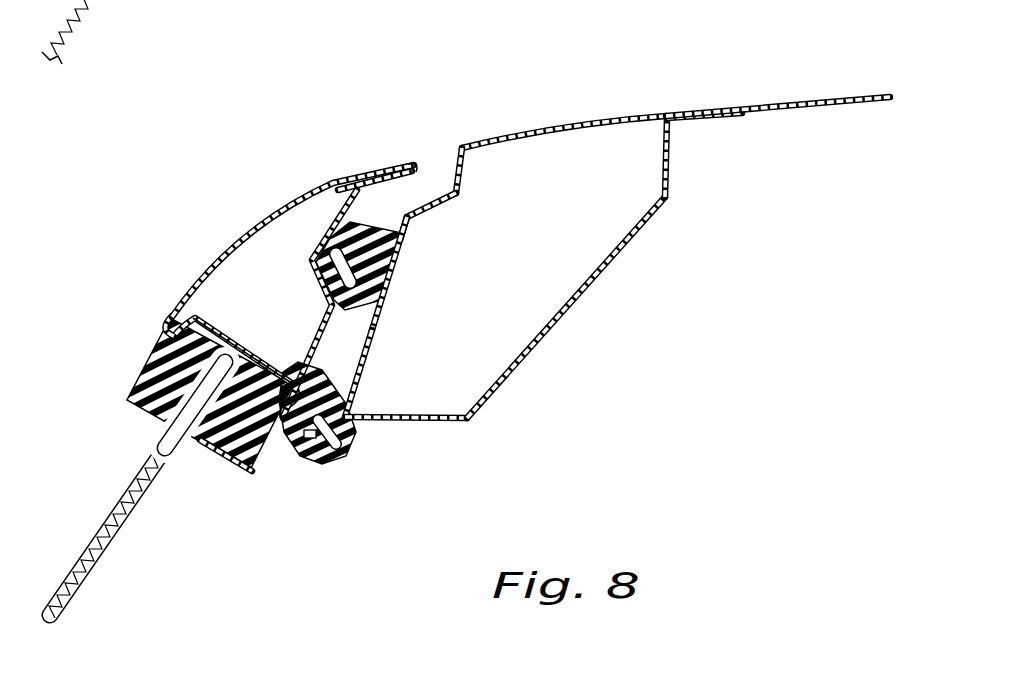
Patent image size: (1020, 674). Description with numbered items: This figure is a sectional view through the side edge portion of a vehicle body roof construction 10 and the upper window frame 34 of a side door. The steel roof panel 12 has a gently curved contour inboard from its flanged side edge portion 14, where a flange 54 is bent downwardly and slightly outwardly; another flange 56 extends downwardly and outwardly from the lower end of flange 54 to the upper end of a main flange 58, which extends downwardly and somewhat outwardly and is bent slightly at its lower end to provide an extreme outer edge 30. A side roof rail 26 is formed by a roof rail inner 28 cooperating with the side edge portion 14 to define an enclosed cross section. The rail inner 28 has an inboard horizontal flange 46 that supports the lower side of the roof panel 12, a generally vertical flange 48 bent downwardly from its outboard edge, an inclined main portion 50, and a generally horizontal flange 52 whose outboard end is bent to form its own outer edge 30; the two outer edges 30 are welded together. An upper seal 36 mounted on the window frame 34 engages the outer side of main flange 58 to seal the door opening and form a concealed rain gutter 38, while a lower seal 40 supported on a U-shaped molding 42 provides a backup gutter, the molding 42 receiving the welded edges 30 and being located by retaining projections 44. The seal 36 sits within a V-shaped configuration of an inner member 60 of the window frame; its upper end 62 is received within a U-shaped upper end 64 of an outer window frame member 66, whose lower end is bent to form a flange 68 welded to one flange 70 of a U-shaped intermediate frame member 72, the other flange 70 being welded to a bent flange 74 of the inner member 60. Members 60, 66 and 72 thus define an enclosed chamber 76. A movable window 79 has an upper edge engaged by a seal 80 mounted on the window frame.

The vehicle body roof construction 10 is at (778, 61).
The roof panel 12 is at (828, 98).
The flanged side edge portion 14 is at (468, 145).
The side roof rail 26 is at (574, 246).
The roof rail inner 28 is at (528, 356).
The extreme outer edges 30 is at (355, 443).
The upper window frame 34 is at (276, 201).
The upper seal 36 is at (350, 250).
The concealed rain gutter 38 is at (428, 192).
The lower seal 40 is at (352, 386).
The molding 42 is at (352, 428).
The retaining projections 44 is at (322, 448).
The inboard horizontal flange 46 is at (722, 120).
The vertical flange 48 is at (672, 172).
The inclined main portion 50 is at (632, 250).
The horizontal flange 52 is at (420, 414).
The flange 54 is at (462, 178).
The flange 56 is at (432, 214).
The main flange 58 is at (376, 304).
The inner member 60 is at (327, 323).
The upper end 62 is at (396, 178).
The U-shaped upper end 64 is at (413, 160).
The outer window frame member 66 is at (205, 282).
The flange 68 is at (160, 378).
The flange 70 is at (190, 324).
The intermediate frame member 72 is at (244, 346).
The bent flange 74 is at (242, 475).
The enclosed chamber 76 is at (285, 243).
The movable window 79 is at (112, 505).
The seal 80 is at (266, 372).